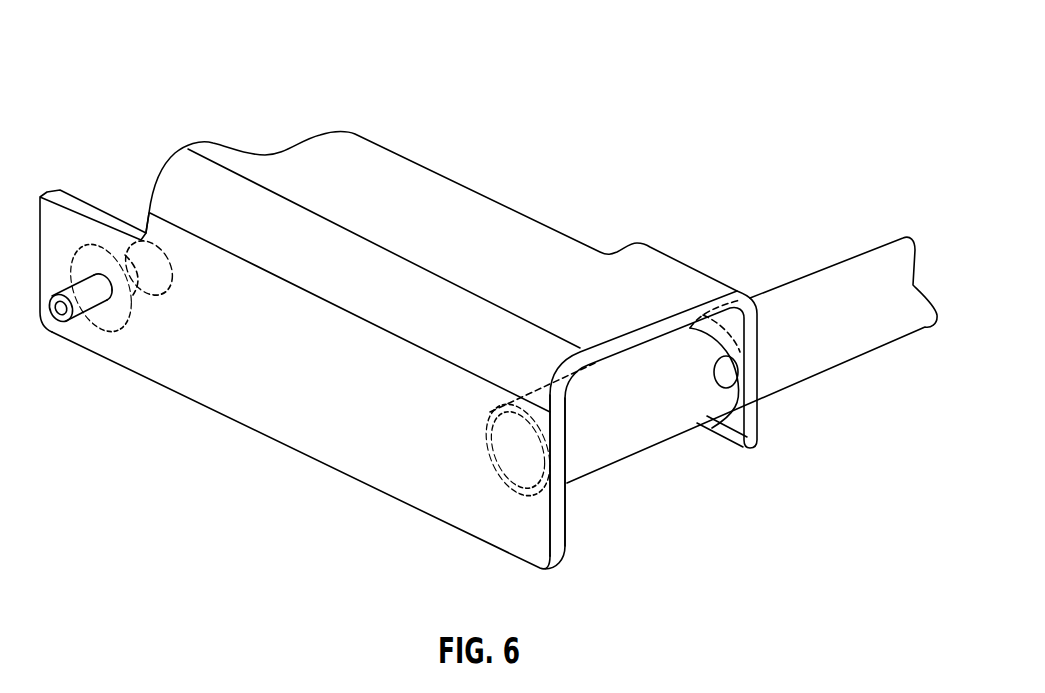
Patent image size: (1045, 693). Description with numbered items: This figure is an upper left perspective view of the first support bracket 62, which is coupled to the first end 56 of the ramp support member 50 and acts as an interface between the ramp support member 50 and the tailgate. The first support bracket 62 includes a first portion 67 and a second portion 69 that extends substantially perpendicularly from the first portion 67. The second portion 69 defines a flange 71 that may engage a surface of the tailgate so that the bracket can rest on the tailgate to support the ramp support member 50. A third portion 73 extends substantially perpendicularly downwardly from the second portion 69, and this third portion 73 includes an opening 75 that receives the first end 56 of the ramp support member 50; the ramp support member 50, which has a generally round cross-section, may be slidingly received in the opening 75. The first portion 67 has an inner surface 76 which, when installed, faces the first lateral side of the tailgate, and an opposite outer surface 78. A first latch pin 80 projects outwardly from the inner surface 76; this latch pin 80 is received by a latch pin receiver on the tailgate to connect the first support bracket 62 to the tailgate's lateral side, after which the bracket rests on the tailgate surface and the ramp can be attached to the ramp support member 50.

The ramp support member 50 is at (869, 237).
The first end 56 is at (633, 427).
The first support bracket 62 is at (200, 421).
The first portion 67 is at (368, 415).
The second portion 69 is at (507, 224).
The flange 71 is at (277, 152).
The third portion 73 is at (757, 450).
The opening 75 is at (723, 355).
The inner surface 76 is at (567, 508).
The outer surface 78 is at (185, 367).
The first latch pin 80 is at (173, 303).